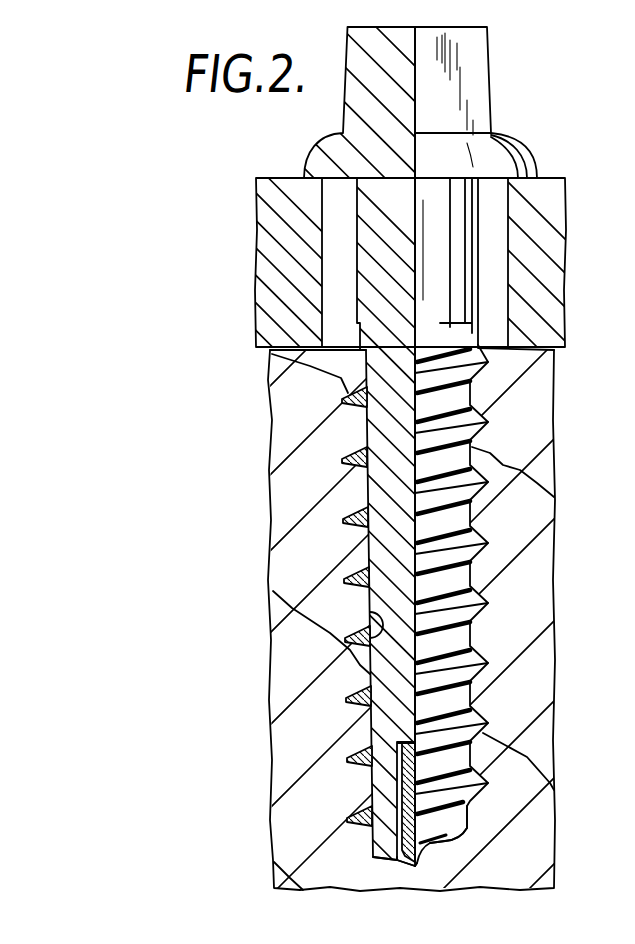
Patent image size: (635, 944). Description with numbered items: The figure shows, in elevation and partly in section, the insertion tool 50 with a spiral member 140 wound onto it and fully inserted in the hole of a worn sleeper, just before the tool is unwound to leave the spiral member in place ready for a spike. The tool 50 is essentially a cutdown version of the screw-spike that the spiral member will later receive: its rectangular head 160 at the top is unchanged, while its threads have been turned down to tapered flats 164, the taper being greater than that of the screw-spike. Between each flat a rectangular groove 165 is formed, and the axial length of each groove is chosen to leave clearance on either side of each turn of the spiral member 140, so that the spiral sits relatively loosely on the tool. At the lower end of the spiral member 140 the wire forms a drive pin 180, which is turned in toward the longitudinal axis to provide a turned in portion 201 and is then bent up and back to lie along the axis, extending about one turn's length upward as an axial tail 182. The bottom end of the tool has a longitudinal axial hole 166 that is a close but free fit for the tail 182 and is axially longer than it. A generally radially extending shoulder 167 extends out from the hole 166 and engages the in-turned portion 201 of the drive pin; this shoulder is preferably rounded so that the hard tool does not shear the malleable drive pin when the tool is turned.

The spiral member 140 is at (486, 409).
The rectangular head 160 is at (517, 86).
The tool 50 is at (567, 223).
The tapered flats 164 is at (368, 532).
The rectangular groove 165 is at (360, 612).
The longitudinal axial hole 166 is at (371, 723).
The axial tail 182 is at (396, 787).
The drive pin 180 is at (255, 851).
The turned in portion 201 is at (483, 840).
The radially extending shoulder 167 is at (425, 857).